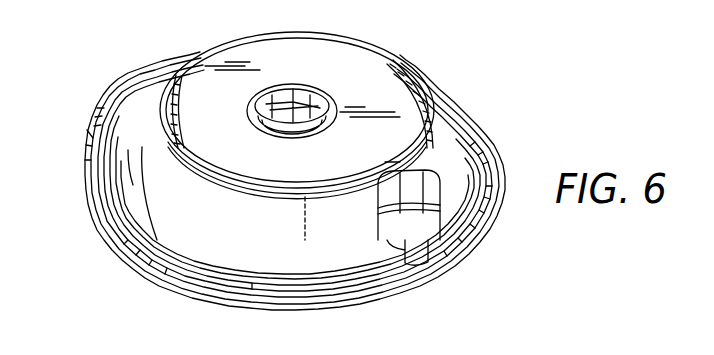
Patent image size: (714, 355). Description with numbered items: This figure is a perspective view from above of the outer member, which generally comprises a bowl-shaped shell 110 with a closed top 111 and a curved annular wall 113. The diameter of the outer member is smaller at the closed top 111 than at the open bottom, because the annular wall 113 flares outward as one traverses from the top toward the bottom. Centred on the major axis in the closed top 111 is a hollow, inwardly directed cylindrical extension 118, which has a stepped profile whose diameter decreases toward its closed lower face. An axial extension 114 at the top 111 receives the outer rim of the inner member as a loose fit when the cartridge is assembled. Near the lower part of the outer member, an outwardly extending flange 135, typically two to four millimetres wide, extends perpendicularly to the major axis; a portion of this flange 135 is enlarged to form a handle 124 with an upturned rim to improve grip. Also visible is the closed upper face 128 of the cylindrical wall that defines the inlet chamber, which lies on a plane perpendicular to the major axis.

The bowl-shaped shell 110 is at (430, 85).
The closed top 111 is at (372, 62).
The curved annular wall 113 is at (130, 154).
The axial extension 114 is at (445, 110).
The cylindrical extension 118 is at (304, 90).
The handle 124 is at (102, 92).
The closed upper face 128 is at (426, 266).
The outwardly extending flange 135 is at (165, 285).